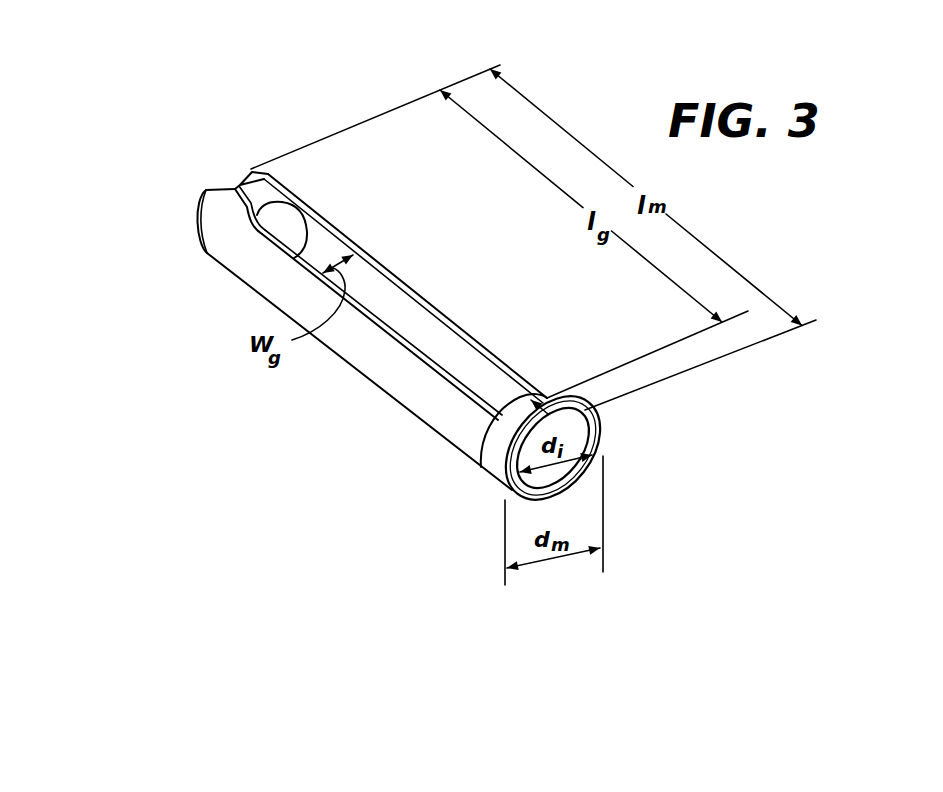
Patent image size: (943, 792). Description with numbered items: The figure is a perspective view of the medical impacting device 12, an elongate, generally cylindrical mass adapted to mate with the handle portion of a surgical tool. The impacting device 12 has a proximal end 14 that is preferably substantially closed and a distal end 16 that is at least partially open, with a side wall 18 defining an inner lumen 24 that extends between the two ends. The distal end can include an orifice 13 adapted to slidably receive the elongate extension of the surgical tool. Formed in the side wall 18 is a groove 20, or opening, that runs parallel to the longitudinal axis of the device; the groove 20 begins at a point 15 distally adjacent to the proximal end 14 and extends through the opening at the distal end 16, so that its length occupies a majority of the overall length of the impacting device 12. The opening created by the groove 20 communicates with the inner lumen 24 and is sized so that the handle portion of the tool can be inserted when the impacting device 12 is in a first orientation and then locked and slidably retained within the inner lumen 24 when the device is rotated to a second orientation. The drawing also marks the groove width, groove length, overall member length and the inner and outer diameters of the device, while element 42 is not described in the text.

The medical impacting device 12 is at (117, 95).
The orifice 13 is at (230, 183).
The proximal end 14 is at (477, 502).
The point distally adjacent to the proximal end 15 is at (480, 466).
The distal end 16 is at (168, 268).
The side wall 18 is at (362, 353).
The groove 20 is at (443, 372).
The inner lumen 24 is at (430, 347).
The inner wall portion 42 is at (298, 228).